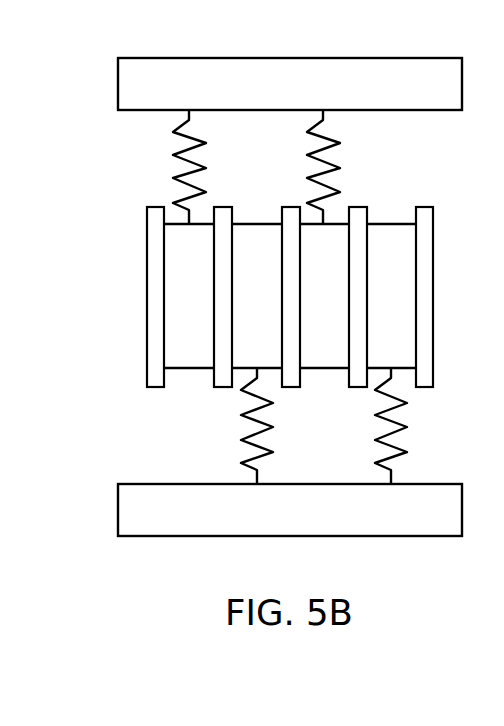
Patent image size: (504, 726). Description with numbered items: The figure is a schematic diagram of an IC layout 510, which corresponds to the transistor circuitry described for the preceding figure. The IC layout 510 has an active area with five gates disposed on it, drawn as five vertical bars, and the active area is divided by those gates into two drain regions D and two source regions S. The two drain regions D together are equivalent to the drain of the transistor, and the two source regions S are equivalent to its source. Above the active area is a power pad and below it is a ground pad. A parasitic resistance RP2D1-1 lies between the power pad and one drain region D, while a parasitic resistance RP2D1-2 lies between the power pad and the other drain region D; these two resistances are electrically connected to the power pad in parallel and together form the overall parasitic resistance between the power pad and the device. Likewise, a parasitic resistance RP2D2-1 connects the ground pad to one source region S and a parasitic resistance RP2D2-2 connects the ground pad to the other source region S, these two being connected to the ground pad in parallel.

The IC layout 510 is at (92, 46).
The parasitic resistance RP2D1-1 is at (141, 167).
The parasitic resistance RP2D1-2 is at (371, 167).
The parasitic resistance RP2D2-1 is at (208, 426).
The parasitic resistance RP2D2-2 is at (437, 426).
The drain region D is at (290, 243).
The source region S is at (290, 347).